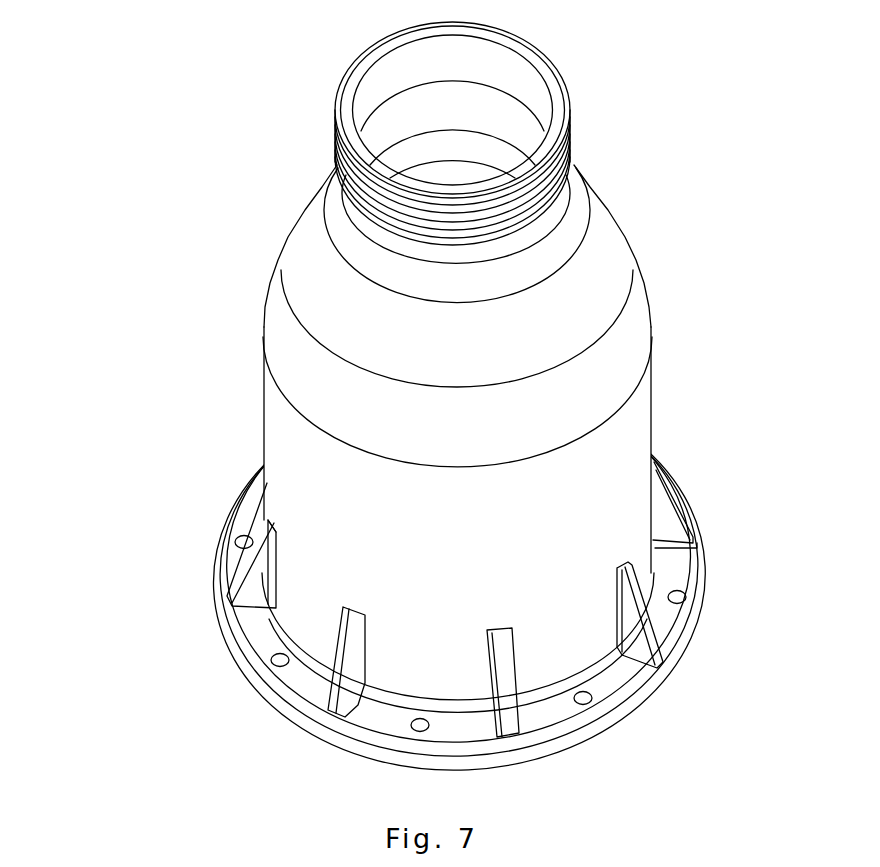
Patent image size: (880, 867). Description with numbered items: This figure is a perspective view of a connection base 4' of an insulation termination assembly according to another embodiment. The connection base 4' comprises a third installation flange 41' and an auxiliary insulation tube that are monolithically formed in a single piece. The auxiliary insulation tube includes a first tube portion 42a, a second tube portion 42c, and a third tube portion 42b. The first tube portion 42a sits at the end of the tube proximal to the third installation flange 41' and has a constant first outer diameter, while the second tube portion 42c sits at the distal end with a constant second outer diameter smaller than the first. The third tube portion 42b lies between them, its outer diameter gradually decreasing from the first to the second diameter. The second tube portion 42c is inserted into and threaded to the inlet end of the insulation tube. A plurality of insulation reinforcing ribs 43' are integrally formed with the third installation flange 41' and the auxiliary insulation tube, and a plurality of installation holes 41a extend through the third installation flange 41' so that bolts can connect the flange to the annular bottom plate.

The connection base 4' is at (721, 245).
The third installation flange 41' is at (494, 575).
The installation holes 41a is at (686, 595).
The first tube portion 42a is at (274, 458).
The third tube portion 42b is at (289, 283).
The second tube portion 42c is at (335, 128).
The insulation reinforcing ribs 43' is at (462, 618).